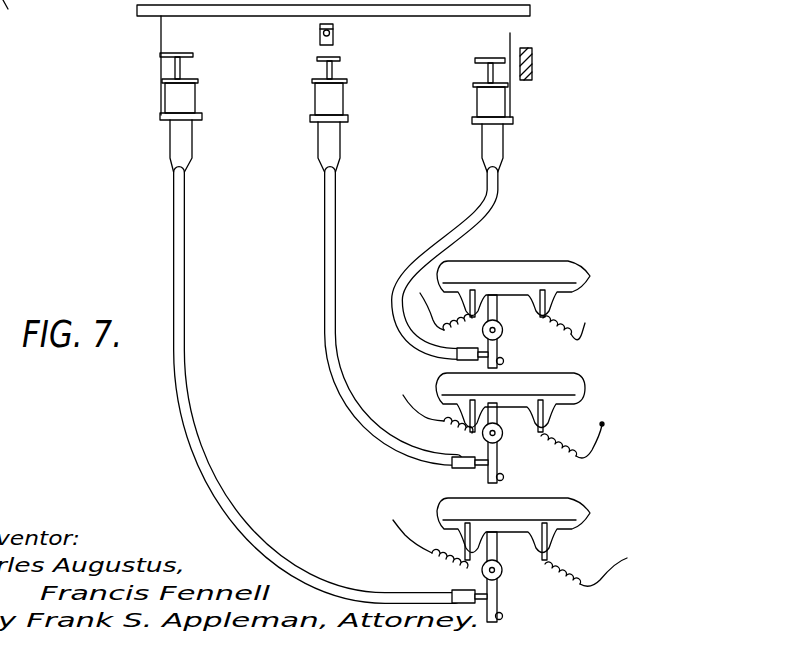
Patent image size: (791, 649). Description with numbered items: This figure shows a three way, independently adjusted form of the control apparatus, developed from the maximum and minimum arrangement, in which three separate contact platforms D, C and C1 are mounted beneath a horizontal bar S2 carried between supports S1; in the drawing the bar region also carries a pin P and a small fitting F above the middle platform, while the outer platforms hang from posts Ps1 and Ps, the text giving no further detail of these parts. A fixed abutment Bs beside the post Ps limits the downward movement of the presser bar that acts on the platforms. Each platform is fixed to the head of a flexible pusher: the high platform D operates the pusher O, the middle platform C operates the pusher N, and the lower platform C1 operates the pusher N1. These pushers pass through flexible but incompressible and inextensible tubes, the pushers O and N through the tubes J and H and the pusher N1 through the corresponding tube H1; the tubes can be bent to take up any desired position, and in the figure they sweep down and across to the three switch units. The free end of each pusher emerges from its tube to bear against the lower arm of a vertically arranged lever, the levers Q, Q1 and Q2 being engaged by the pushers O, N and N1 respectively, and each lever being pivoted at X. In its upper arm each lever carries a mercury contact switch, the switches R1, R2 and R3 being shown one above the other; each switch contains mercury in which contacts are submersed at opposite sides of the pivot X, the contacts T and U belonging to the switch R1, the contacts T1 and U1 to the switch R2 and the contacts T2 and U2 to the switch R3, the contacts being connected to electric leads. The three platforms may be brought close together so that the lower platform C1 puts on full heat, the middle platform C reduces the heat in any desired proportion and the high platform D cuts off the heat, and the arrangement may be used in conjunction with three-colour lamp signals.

The support rod S1 is at (339, 7).
The cross bar S2 is at (312, 8).
The post Ps1 is at (162, 50).
The lower contact platform C1 is at (195, 53).
The pin P is at (320, 30).
The fastener plate F is at (335, 39).
The middle contact platform C is at (317, 58).
The high contact platform D is at (487, 58).
The post Ps is at (512, 43).
The fixed abutment Bs is at (533, 68).
The hose H1 is at (185, 267).
The flexible tube H is at (334, 238).
The flexible tube J is at (496, 193).
The relay R1 is at (495, 268).
The contact T is at (470, 308).
The contact U is at (547, 322).
The pivot X is at (499, 330).
The switch lever Q is at (497, 348).
The flexible pusher O is at (483, 362).
The relay R2 is at (570, 378).
The terminal coil T1 is at (463, 415).
The terminal coil U1 is at (543, 432).
The switch lever Q1 is at (497, 455).
The flexible pusher N is at (481, 463).
The relay R3 is at (566, 490).
The terminal coil T2 is at (463, 550).
The terminal coil U2 is at (548, 556).
The switch lever Q2 is at (498, 587).
The flexible push rod N1 is at (470, 581).